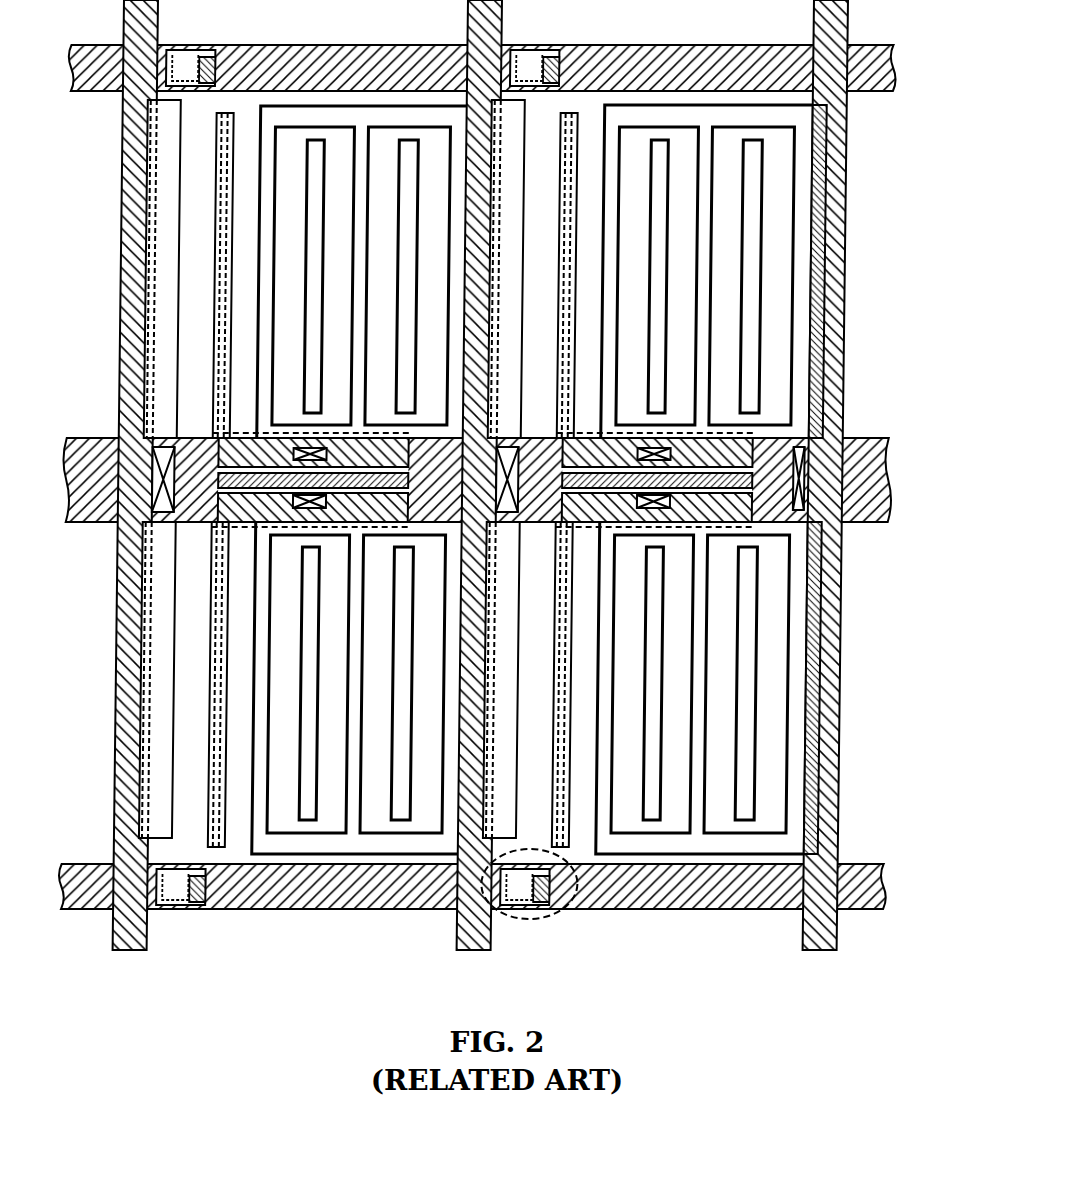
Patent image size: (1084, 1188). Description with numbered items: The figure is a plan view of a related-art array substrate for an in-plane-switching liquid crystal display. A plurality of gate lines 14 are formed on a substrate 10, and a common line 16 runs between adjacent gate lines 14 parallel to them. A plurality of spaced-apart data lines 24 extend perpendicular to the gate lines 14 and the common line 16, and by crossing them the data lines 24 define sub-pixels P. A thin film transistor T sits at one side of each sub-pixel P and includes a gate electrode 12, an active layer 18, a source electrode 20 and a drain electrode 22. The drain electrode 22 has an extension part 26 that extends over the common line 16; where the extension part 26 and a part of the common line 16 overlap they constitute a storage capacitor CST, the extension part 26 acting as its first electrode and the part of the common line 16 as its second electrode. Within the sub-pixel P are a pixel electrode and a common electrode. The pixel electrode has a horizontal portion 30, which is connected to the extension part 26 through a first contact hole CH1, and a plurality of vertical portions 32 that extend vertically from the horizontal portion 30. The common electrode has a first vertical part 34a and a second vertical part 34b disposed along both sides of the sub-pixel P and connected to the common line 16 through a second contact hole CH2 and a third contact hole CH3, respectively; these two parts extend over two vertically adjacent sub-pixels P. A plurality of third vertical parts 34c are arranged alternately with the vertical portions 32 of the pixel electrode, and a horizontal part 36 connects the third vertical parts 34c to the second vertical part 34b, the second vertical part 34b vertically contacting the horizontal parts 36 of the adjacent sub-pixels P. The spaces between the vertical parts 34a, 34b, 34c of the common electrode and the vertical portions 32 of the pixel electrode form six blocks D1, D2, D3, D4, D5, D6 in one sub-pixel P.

The substrate 10 is at (866, 952).
The gate electrode 12 is at (525, 1000).
The gate line 14 is at (896, 59).
The common line 16 is at (896, 466).
The active layer 18 is at (532, 908).
The source electrode 20 is at (498, 925).
The drain electrode 22 is at (561, 908).
The data line 24 is at (124, 738).
The extension part 26 is at (712, 506).
The horizontal portion 30 is at (693, 464).
The vertical portion 32 is at (662, 633).
The first vertical part 34a is at (499, 748).
The second vertical part 34b is at (823, 640).
The third vertical part 34c is at (613, 760).
The horizontal part 36 is at (677, 105).
The first contact hole CH1 is at (623, 522).
The second contact hole CH2 is at (521, 440).
The third contact hole CH3 is at (806, 440).
The thin film transistor T is at (538, 848).
The storage capacitor CST is at (749, 508).
The sub-pixel P is at (108, 865).
The block D1 is at (527, 281).
The block D2 is at (579, 281).
The block D3 is at (622, 281).
The block D4 is at (671, 281).
The block D5 is at (715, 281).
The block D6 is at (765, 281).